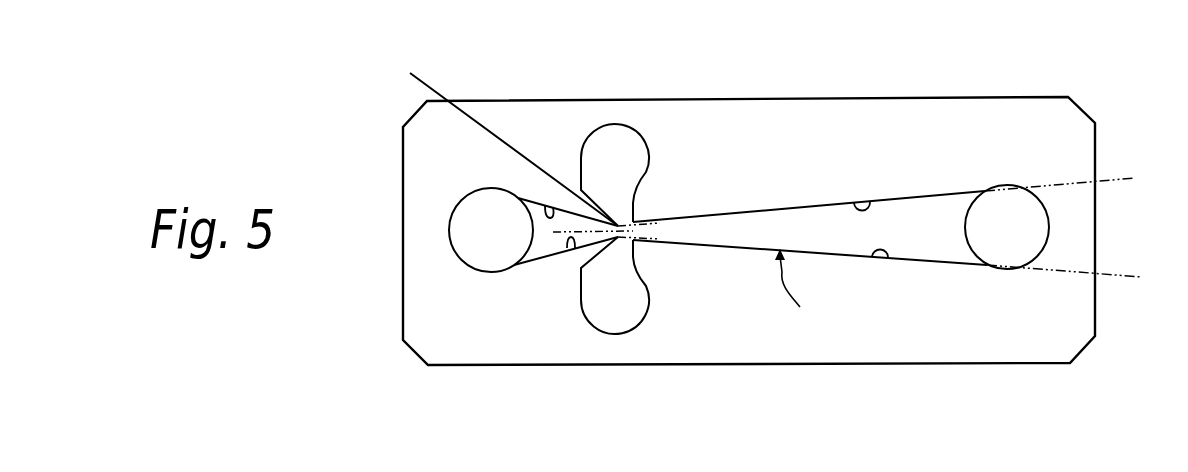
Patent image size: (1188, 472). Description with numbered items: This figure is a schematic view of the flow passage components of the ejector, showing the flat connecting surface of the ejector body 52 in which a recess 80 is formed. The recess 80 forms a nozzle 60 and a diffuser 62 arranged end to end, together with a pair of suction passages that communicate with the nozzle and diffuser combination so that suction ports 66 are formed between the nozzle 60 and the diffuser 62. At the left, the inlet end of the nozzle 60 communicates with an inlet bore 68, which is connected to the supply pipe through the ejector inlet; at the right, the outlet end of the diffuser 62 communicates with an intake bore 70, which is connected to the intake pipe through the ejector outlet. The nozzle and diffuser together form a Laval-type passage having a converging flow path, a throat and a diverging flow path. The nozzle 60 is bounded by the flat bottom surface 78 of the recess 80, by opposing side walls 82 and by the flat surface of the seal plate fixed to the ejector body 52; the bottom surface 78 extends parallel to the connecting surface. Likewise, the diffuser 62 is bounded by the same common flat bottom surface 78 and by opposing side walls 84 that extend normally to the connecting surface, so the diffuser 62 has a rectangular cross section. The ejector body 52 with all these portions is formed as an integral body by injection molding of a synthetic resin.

The ejector body 52 is at (403, 225).
The nozzle 60 is at (495, 140).
The diffuser 62 is at (722, 250).
The suction ports 66 is at (632, 205).
The inlet bore 68 is at (493, 257).
The intake bore 70 is at (1022, 226).
The flat bottom surface 78 is at (545, 247).
The recess 80 is at (796, 294).
The side walls 82 is at (549, 206).
The side walls 84 is at (873, 203).